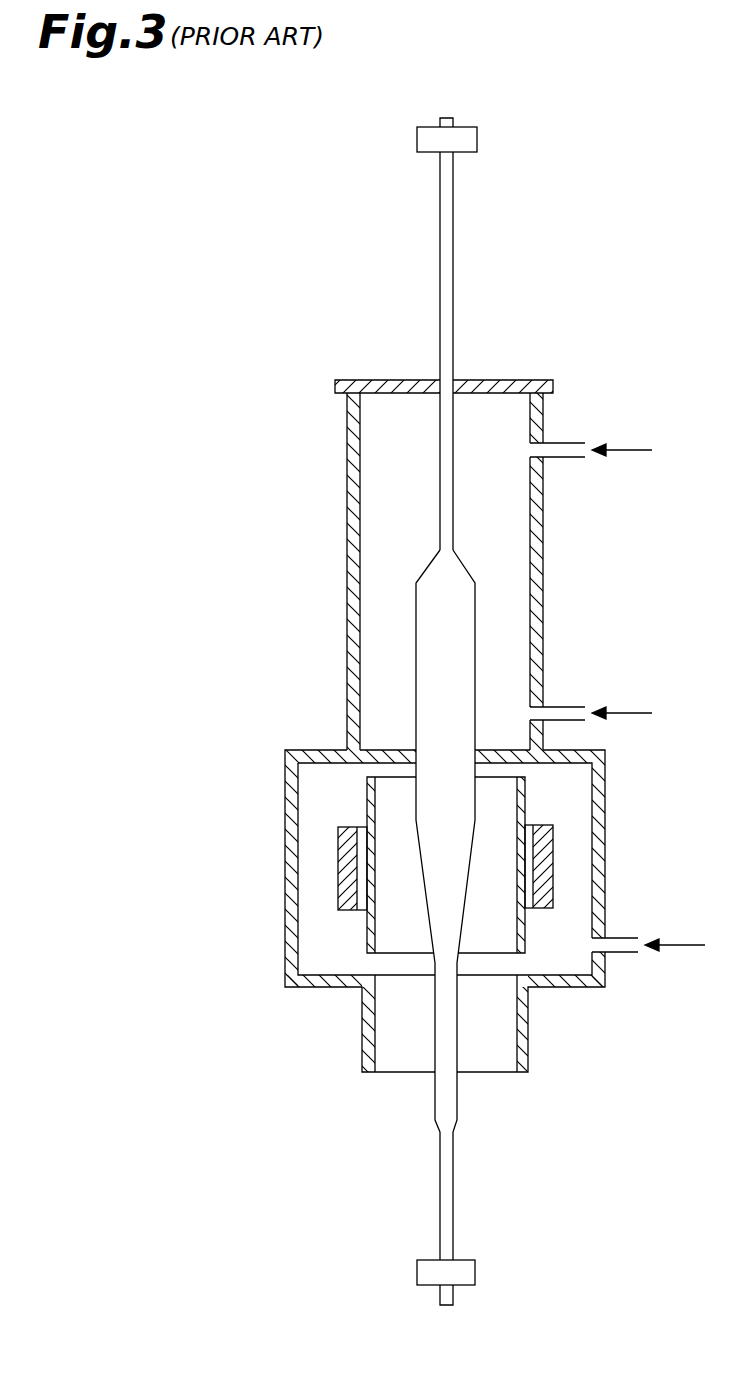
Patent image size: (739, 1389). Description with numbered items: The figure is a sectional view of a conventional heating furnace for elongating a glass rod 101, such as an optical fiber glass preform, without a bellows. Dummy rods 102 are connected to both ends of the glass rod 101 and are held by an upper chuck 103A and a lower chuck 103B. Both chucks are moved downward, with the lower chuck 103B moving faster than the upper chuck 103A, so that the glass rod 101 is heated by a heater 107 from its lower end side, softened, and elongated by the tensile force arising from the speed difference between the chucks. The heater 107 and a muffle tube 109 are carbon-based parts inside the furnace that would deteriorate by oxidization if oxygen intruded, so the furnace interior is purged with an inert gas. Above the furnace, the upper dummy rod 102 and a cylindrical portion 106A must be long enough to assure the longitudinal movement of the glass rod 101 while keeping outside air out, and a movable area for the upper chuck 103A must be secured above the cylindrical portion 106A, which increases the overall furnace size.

The glass rod 101 is at (440, 705).
The dummy rod 102 is at (447, 253).
The upper chuck 103A is at (430, 132).
The lower chuck 103B is at (465, 1270).
The cylindrical portion 106A is at (545, 582).
The heater 107 is at (348, 870).
The muffle tube 109 is at (362, 923).